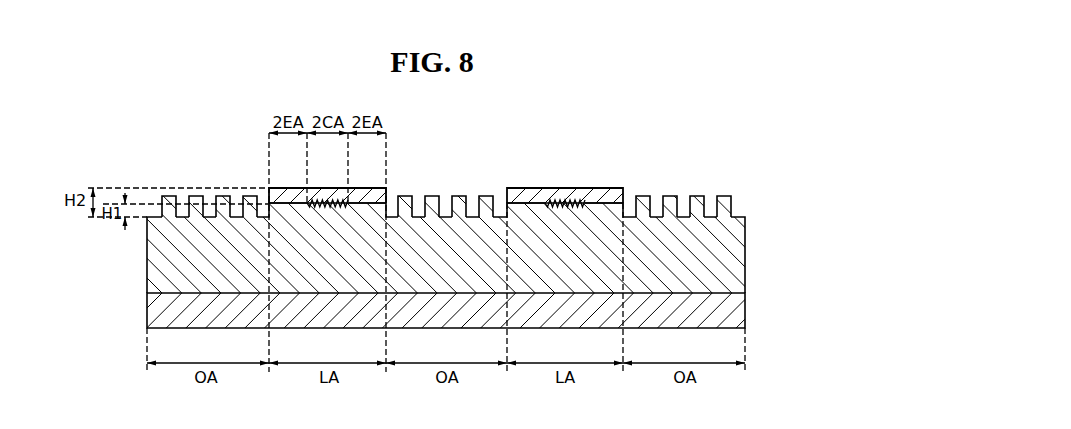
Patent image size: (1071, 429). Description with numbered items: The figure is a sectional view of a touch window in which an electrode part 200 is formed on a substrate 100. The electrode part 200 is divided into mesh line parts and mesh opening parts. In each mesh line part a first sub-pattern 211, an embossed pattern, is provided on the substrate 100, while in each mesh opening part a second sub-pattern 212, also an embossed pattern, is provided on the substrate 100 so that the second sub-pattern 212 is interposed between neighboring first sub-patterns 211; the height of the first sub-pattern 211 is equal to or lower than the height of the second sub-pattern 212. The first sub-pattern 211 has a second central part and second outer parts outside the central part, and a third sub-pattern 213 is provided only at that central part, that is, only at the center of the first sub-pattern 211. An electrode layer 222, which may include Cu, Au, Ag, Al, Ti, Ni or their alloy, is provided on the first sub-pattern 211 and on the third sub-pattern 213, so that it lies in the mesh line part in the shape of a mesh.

The substrate 100 is at (748, 310).
The electrode part 200 is at (748, 257).
The first sub-pattern 211 is at (613, 199).
The second sub-pattern 212 is at (723, 198).
The third sub-pattern 213 is at (332, 198).
The electrode layer 222 is at (528, 192).